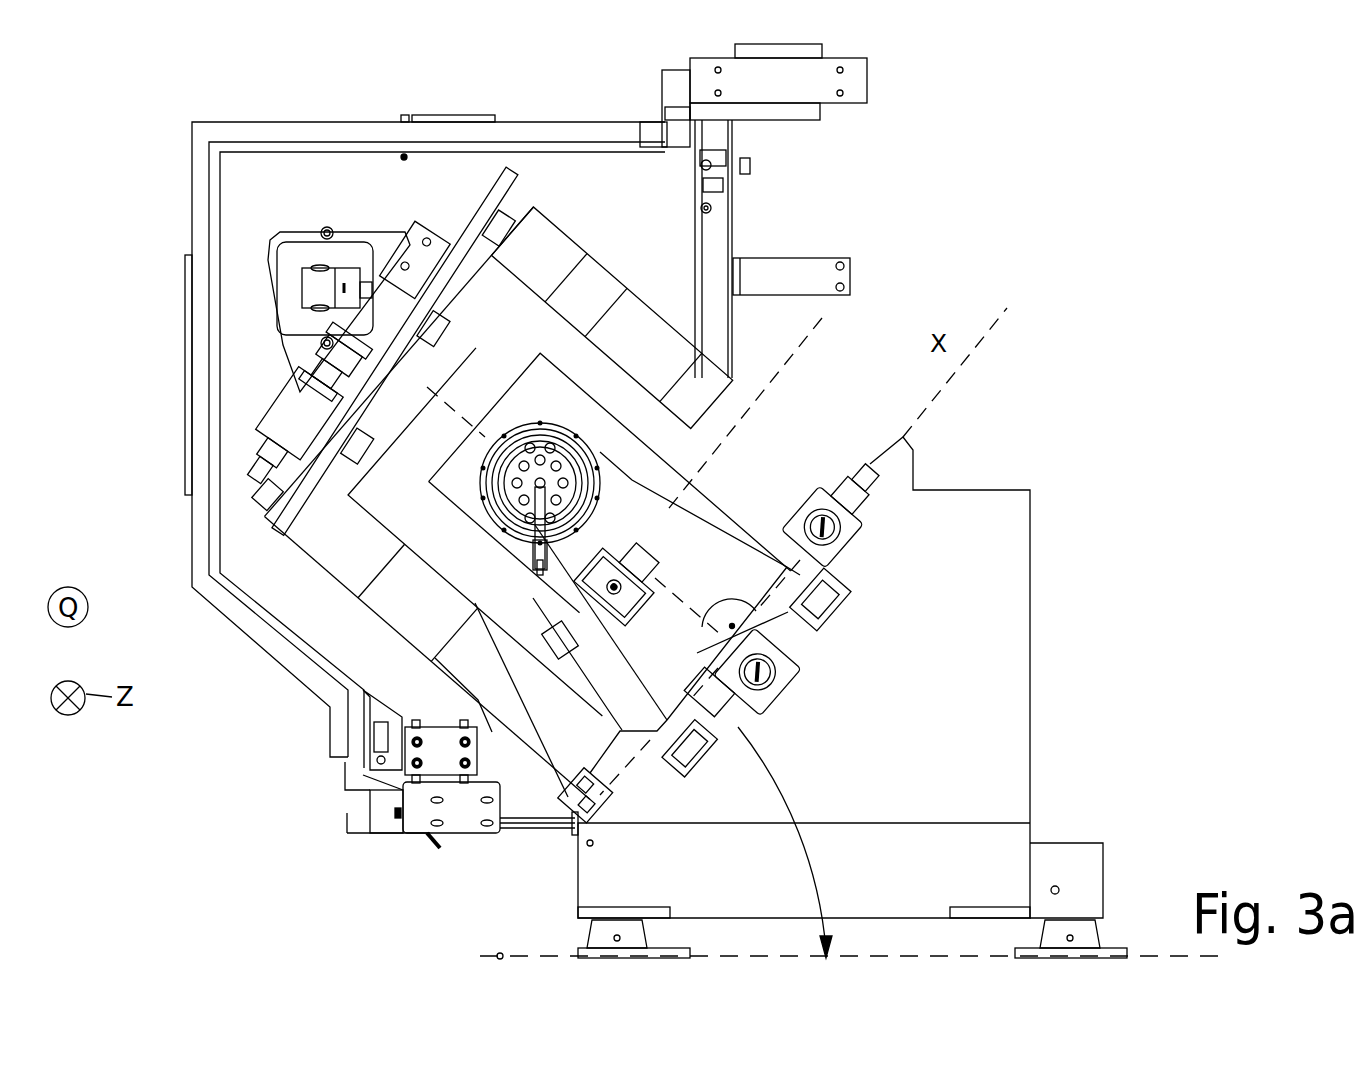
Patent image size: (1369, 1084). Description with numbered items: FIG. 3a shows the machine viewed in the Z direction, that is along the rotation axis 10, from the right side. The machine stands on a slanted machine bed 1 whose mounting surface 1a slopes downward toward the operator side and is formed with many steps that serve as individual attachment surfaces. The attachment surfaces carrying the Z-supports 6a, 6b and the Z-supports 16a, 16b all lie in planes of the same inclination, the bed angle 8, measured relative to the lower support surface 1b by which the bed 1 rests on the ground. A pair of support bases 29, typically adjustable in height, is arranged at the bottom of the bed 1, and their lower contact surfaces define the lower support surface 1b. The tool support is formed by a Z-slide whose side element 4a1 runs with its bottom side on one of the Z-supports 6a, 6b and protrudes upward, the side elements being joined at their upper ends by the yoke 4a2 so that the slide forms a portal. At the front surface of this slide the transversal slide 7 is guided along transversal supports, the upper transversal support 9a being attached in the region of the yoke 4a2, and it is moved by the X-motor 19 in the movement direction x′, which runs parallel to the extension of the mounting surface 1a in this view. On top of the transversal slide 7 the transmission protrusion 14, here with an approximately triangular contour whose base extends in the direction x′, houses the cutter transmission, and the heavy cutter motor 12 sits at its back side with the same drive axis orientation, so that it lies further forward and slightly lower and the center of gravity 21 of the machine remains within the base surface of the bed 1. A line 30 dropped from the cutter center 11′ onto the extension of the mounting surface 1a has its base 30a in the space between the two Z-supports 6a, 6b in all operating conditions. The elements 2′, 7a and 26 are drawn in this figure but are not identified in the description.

The machine bed 1 is at (840, 677).
The mounting surface 1a is at (937, 397).
The lower support surface 1b is at (732, 975).
The axis of rotation 2′ is at (573, 516).
The side element 4a1 is at (611, 467).
The yoke 4a2 is at (385, 345).
The Z-support 6a is at (848, 478).
The Z-support 6b is at (605, 795).
The transversal slide 7 is at (477, 531).
The workpiece holder 7a is at (495, 547).
The bed angle 8 is at (796, 812).
The upper transversal support 9a is at (270, 535).
The rotation axis 10 is at (512, 487).
The cutter center 11′ is at (451, 483).
The cutter motor 12 is at (298, 250).
The transmission protrusion 14 is at (372, 236).
The Z-support 16a is at (828, 592).
The Z-support 16b is at (705, 762).
The X-motor 19 is at (297, 412).
The center of gravity 21 is at (733, 382).
The housing frame 26 is at (205, 130).
The support base 29 is at (612, 930).
The line 30 is at (665, 584).
The base of the line 30a is at (740, 637).
The movement direction X′ x′ is at (775, 372).